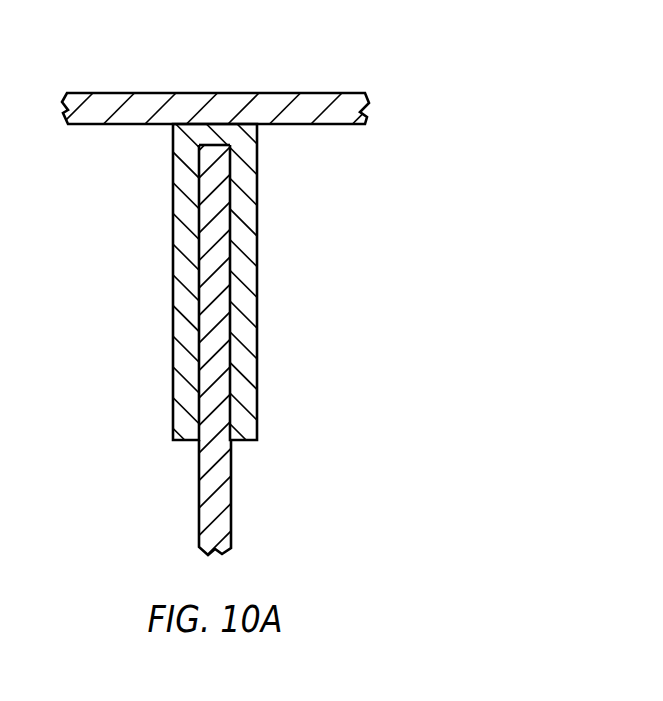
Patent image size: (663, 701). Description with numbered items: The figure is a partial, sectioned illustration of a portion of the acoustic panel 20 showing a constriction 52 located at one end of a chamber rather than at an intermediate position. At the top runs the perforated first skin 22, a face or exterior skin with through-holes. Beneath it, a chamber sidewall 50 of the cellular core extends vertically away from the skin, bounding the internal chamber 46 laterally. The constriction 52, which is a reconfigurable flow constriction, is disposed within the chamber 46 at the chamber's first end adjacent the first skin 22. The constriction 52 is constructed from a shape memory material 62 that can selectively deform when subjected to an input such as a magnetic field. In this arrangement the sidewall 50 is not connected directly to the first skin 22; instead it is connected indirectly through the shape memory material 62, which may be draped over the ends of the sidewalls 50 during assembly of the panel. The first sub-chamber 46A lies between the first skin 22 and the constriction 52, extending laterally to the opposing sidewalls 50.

The acoustic panel 20 is at (308, 278).
The perforated first skin 22 is at (367, 103).
The shape memory material 62 is at (213, 133).
The chamber constriction 52 is at (163, 257).
The internal chamber 46 is at (32, 376).
The first sub-chamber 46A is at (342, 376).
The chamber sidewall 50 is at (228, 518).